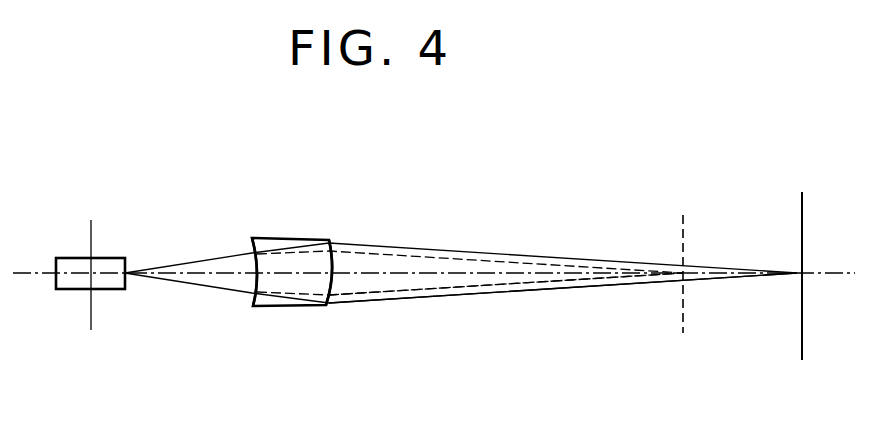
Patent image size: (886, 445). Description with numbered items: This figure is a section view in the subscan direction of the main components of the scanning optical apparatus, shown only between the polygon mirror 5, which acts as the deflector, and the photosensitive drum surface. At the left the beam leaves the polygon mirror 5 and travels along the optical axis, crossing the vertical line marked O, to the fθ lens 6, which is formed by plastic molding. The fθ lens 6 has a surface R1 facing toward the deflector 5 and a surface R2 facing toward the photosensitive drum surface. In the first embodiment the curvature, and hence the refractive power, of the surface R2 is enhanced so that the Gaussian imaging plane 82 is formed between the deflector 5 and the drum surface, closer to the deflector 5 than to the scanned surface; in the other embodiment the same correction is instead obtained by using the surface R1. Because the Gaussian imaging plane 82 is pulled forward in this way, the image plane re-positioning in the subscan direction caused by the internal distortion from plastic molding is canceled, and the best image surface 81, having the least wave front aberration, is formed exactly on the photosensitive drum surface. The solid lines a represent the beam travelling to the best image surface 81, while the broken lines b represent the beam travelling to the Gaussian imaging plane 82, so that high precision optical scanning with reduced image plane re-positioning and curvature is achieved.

The polygon mirror 5 is at (72, 292).
The object plane O is at (92, 315).
The fθ lens 6 is at (296, 307).
The surface of the fθ lens facing the deflector R1 is at (252, 303).
The surface of the fθ lens facing the photosensitive drum surface R2 is at (325, 305).
The solid lines a is at (420, 298).
The broken lines b is at (477, 283).
The Gaussian imaging plane 82 is at (683, 333).
The best image surface 81 is at (802, 348).